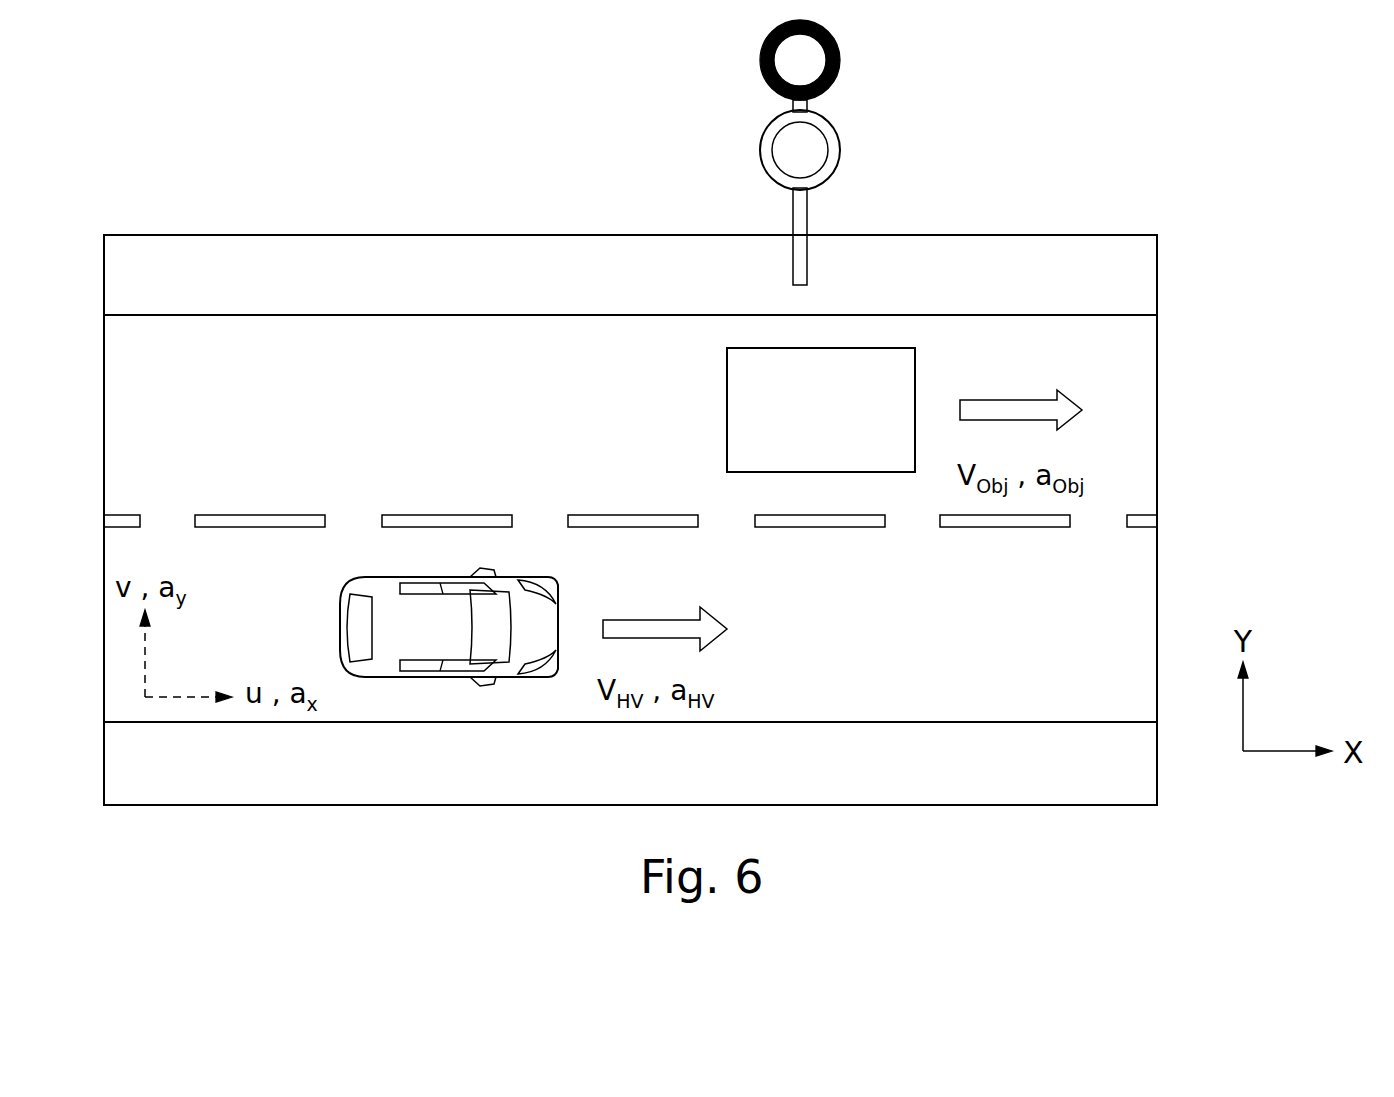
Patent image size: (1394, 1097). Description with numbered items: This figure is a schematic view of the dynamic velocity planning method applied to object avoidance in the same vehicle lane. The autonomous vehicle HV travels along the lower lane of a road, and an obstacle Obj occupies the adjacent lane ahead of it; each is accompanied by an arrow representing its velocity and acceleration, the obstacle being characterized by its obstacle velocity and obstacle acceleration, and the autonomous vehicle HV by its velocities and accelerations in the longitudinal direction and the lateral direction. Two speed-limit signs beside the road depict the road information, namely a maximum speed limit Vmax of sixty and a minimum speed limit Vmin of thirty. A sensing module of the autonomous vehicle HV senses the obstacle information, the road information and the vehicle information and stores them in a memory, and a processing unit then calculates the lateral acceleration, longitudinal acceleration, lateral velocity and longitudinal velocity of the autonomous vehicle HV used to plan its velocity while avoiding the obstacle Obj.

The maximum speed limit Vmax is at (838, 62).
The minimum speed limit Vmin is at (838, 152).
The obstacle Obj is at (821, 410).
The autonomous vehicle HV is at (449, 627).